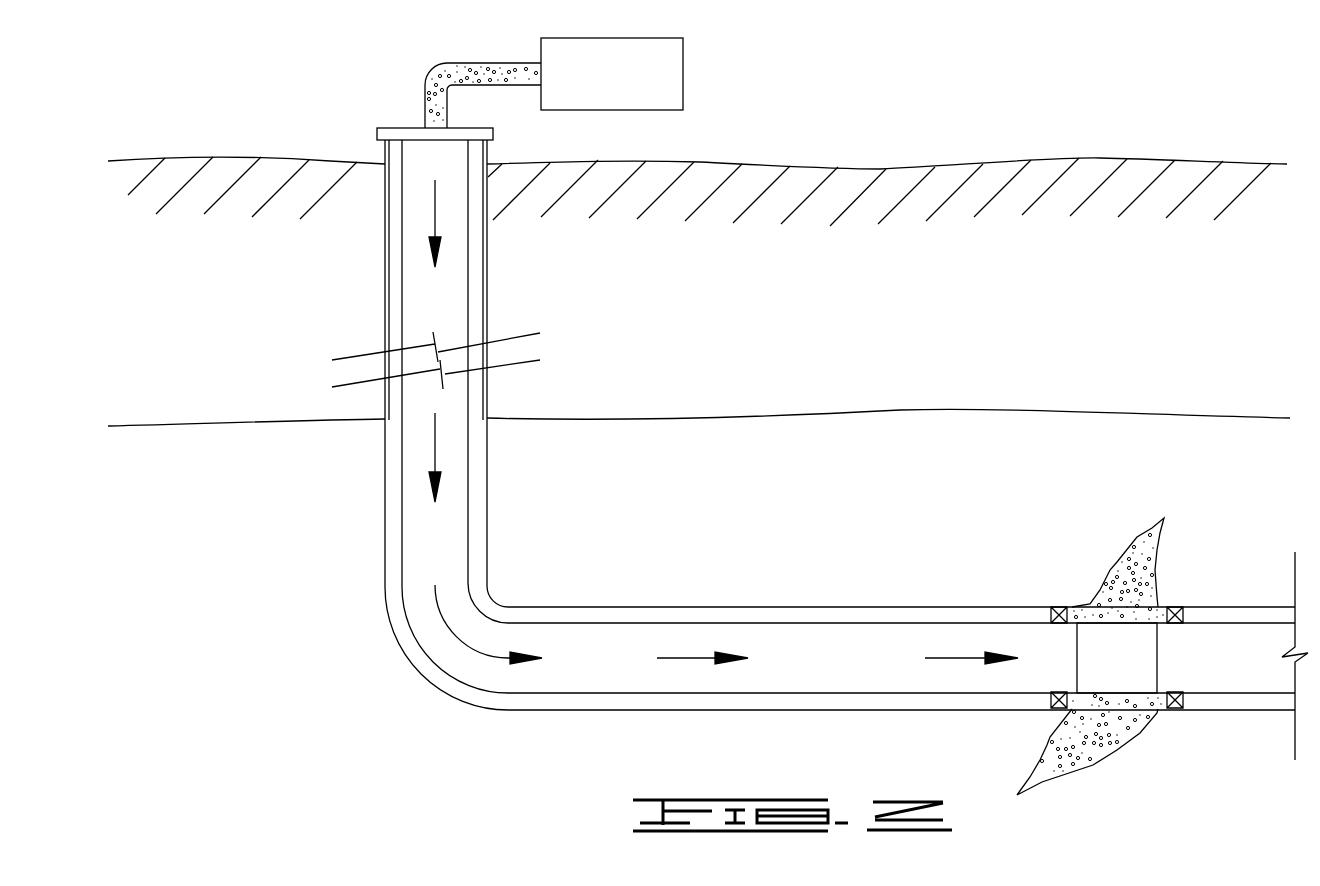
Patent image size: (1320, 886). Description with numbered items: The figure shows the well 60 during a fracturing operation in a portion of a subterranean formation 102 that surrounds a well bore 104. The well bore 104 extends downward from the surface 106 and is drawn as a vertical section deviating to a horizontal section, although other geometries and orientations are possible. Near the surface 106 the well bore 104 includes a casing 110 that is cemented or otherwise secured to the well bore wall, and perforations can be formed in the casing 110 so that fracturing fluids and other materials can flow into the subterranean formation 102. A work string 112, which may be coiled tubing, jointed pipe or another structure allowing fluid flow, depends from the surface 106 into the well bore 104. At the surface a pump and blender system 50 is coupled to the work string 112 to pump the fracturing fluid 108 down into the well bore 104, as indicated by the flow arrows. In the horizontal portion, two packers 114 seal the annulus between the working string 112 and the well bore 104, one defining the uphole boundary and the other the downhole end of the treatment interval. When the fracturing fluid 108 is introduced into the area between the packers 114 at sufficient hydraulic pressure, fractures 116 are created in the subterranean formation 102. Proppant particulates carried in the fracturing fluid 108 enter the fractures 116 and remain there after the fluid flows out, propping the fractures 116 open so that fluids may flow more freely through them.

The pump and blender system 50 is at (625, 86).
The well 60 is at (398, 704).
The subterranean formation 102 is at (862, 459).
The well bore 104 is at (395, 289).
The surface 106 is at (1100, 160).
The fracturing fluid 108 is at (440, 65).
The casing 110 is at (388, 333).
The work string 112 is at (400, 523).
The packers 114 is at (1060, 604).
The fractures 116 is at (1102, 542).